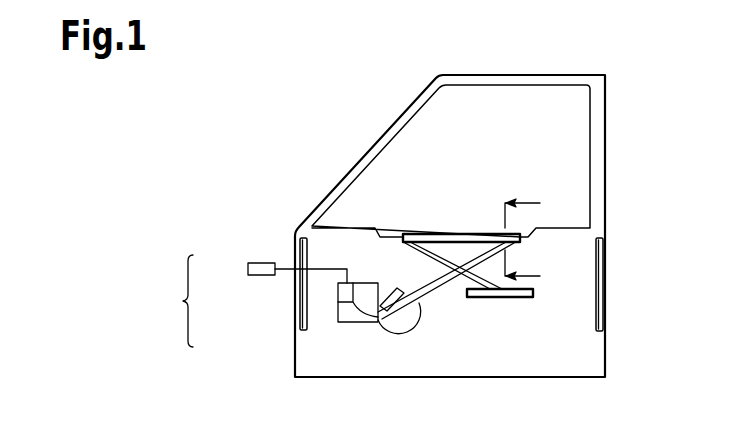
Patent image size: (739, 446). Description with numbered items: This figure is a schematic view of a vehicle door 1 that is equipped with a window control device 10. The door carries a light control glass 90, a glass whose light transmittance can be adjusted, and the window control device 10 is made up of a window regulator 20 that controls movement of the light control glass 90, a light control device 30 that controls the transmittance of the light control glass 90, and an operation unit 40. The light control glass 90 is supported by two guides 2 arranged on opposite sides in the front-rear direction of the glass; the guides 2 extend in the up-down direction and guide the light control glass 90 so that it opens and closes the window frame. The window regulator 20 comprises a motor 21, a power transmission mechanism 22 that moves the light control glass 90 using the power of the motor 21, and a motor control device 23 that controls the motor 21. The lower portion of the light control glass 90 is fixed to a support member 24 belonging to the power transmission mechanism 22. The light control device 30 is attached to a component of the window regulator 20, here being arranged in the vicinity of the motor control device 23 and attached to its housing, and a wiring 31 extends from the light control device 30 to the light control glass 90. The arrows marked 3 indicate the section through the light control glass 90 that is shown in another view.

The vehicle door 1 is at (605, 97).
The light control glass 90 is at (583, 145).
The guides 2 is at (298, 245).
The cross-section line 3 is at (532, 240).
The window control device 10 is at (173, 301).
The window regulator 20 is at (335, 313).
The motor 21 is at (390, 288).
The power transmission mechanism 22 is at (474, 226).
The motor control device 23 is at (353, 323).
The support member 24 is at (437, 233).
The light control device 30 is at (338, 294).
The wiring 31 is at (450, 297).
The operation unit 40 is at (248, 268).